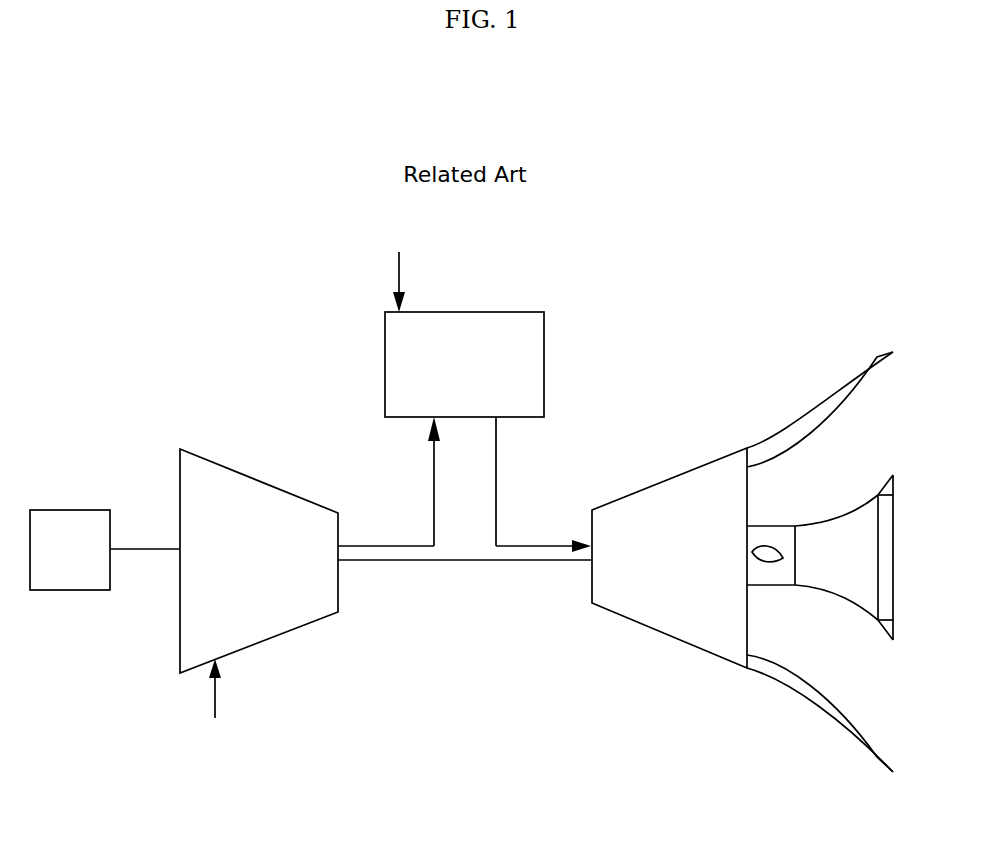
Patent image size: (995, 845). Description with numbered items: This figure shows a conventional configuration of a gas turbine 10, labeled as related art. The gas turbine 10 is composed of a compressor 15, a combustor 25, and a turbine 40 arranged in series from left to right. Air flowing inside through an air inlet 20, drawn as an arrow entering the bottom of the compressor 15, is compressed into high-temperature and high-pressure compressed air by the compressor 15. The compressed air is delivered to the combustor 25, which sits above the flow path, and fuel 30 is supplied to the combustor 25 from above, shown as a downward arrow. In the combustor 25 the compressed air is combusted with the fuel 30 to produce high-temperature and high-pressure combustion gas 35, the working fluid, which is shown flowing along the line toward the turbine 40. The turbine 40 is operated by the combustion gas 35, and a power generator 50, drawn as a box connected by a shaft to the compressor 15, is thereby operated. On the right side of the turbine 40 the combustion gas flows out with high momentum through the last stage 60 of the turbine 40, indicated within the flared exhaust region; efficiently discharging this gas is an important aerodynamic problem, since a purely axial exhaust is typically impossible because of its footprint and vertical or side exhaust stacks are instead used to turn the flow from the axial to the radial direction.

The gas turbine 10 is at (222, 350).
The compressor 15 is at (246, 575).
The air inlet 20 is at (215, 697).
The combustor 25 is at (452, 377).
The fuel 30 is at (399, 275).
The combustion gas 35 is at (531, 542).
The turbine 40 is at (655, 569).
The power generator 50 is at (70, 550).
The last stage 60 is at (784, 548).